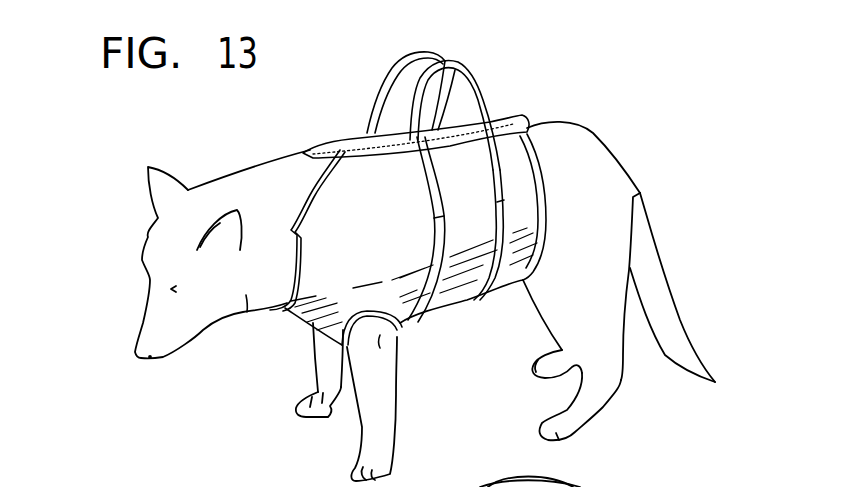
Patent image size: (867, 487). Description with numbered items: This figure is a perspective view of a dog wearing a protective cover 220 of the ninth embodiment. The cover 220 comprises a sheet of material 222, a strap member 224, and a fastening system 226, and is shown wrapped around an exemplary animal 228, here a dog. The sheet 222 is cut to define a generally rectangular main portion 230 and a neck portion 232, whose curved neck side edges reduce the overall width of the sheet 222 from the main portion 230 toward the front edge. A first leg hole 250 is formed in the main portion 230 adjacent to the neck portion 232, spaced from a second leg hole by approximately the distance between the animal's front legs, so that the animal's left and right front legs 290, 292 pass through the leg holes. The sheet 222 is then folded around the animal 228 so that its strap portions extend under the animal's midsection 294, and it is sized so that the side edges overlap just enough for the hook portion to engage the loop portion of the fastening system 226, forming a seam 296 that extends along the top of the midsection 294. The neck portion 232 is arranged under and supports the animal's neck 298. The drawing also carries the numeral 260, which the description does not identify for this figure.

The protective cover 220 is at (532, 71).
The sheet of material 222 is at (339, 135).
The strap member 224 is at (471, 63).
The fastening system 226 is at (298, 147).
The animal 228 is at (128, 256).
The main portion 230 is at (352, 293).
The neck portion 232 is at (293, 307).
The first leg hole 250 is at (382, 336).
The container 260 is at (588, 482).
The left front leg 290 is at (388, 420).
The right front leg 292 is at (320, 420).
The midsection 294 is at (477, 310).
The seam 296 is at (532, 109).
The neck 298 is at (246, 295).